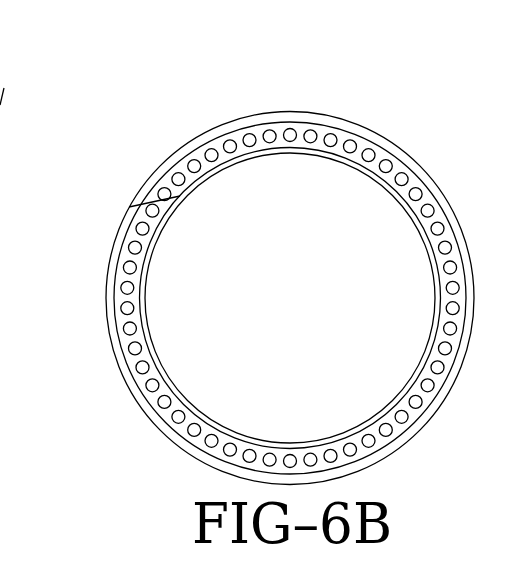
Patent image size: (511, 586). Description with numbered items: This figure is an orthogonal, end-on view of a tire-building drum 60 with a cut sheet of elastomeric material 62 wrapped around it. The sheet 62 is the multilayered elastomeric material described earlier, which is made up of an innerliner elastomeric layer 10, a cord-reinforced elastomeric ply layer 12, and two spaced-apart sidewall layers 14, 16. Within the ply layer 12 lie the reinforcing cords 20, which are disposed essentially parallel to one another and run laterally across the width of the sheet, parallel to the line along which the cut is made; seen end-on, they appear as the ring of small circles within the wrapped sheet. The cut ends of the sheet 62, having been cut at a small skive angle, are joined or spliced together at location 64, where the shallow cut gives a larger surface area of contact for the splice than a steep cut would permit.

The innerliner elastomeric layer 10 is at (142, 323).
The cord-reinforced elastomeric ply layer 12 is at (437, 378).
The sidewall layer 14 is at (173, 433).
The sidewall layer 16 is at (173, 433).
The reinforcing cords 20 is at (370, 153).
The tire-building drum 60 is at (258, 182).
The cut sheet of elastomeric material 62 is at (330, 115).
The splice location 64 is at (150, 203).